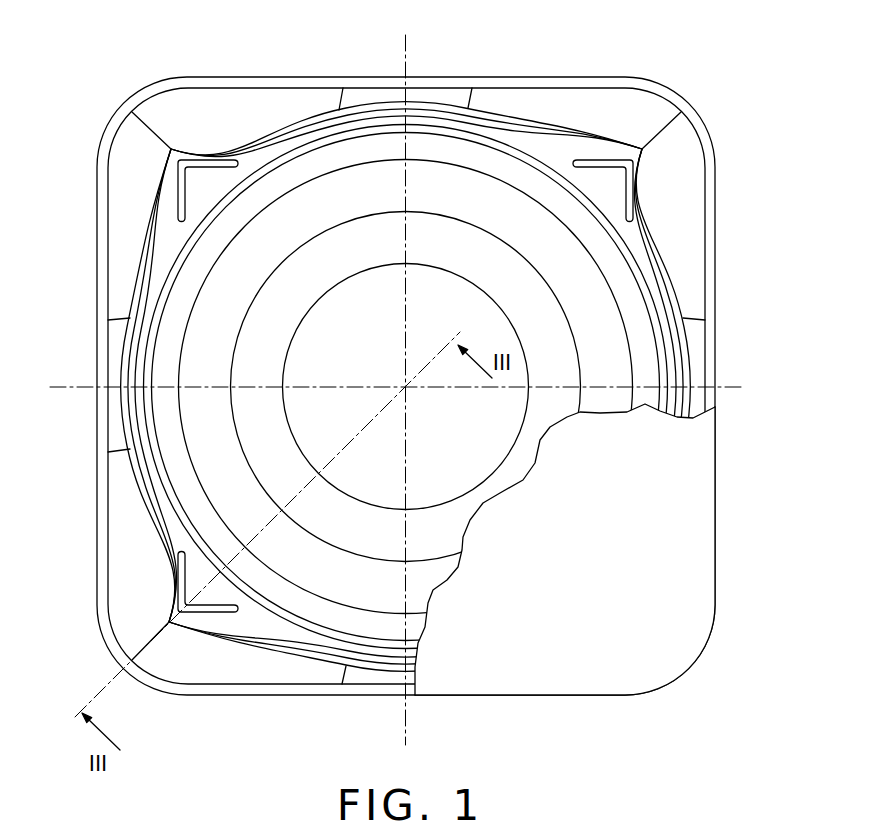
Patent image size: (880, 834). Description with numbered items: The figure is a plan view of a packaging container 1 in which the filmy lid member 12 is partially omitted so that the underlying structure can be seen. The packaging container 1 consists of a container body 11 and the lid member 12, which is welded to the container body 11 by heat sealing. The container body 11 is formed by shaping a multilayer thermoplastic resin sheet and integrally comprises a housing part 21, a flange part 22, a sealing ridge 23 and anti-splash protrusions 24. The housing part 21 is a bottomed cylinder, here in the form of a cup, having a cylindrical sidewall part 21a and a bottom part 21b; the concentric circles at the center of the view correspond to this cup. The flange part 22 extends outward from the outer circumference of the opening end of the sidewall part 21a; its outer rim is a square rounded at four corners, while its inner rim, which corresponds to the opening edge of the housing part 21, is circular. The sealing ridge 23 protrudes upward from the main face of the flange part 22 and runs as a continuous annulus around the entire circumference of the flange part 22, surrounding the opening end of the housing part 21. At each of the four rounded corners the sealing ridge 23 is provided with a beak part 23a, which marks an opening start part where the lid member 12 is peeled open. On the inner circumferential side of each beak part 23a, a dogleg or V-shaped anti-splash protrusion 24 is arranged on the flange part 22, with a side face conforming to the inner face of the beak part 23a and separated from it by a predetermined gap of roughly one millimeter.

The packaging container 1 is at (766, 232).
The container body 11 is at (685, 51).
The lid member 12 is at (693, 512).
The housing part 21 is at (406, 324).
The sidewall part 21a is at (290, 155).
The bottom part 21b is at (365, 240).
The flange part 22 is at (203, 100).
The sealing ridge 23 is at (170, 185).
The beak part 23a is at (171, 149).
The anti-splash protrusion 24 is at (197, 163).